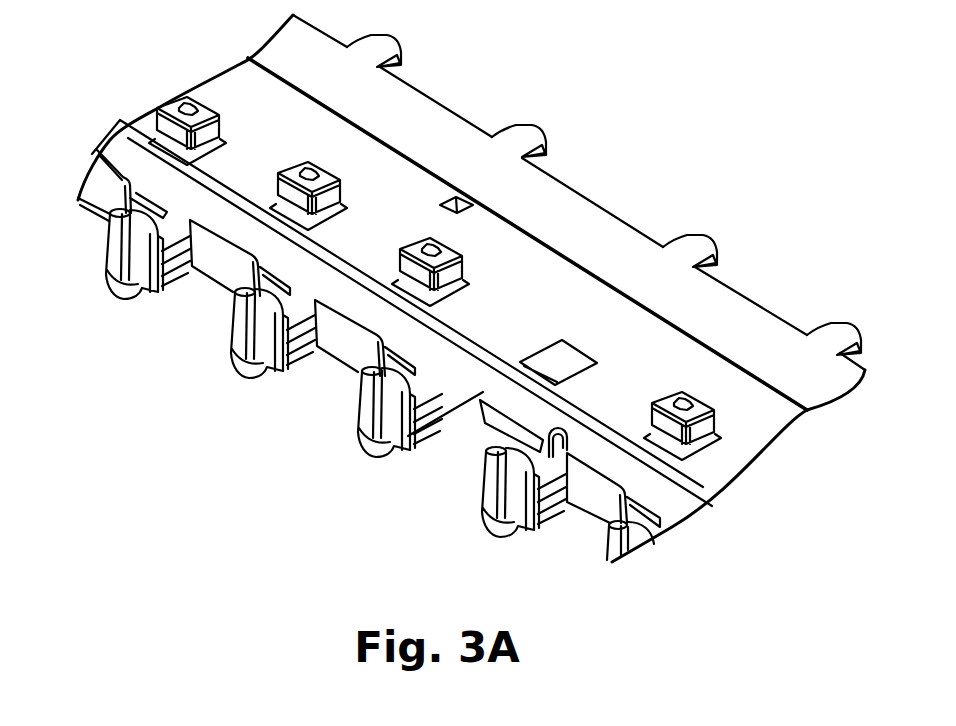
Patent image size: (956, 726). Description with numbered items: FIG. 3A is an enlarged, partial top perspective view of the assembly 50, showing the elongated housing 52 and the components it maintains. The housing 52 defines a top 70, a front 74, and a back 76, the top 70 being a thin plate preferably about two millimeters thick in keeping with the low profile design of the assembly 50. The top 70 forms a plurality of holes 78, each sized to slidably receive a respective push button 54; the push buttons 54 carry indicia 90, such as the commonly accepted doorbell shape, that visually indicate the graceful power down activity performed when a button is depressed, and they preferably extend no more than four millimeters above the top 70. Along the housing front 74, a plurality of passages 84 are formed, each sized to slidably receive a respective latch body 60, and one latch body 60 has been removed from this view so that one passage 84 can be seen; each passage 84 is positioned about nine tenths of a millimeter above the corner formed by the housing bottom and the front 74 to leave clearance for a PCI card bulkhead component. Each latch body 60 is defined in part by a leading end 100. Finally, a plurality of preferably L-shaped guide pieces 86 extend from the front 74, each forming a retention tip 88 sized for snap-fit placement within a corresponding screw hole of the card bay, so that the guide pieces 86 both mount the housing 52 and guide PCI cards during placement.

The assembly 50 is at (611, 54).
The housing 52 is at (455, 114).
The push button 54 is at (671, 393).
The latch body 60 is at (588, 502).
The top 70 is at (600, 228).
The front 74 is at (162, 182).
The back 76 is at (748, 297).
The hole 78 is at (337, 216).
The passage 84 is at (493, 418).
The guide piece 86 is at (140, 298).
The retention tip 88 is at (114, 300).
The indicia 90 is at (438, 253).
The leading end 100 is at (343, 347).